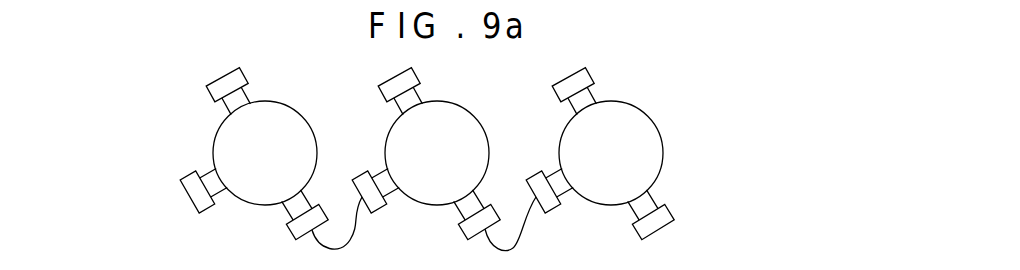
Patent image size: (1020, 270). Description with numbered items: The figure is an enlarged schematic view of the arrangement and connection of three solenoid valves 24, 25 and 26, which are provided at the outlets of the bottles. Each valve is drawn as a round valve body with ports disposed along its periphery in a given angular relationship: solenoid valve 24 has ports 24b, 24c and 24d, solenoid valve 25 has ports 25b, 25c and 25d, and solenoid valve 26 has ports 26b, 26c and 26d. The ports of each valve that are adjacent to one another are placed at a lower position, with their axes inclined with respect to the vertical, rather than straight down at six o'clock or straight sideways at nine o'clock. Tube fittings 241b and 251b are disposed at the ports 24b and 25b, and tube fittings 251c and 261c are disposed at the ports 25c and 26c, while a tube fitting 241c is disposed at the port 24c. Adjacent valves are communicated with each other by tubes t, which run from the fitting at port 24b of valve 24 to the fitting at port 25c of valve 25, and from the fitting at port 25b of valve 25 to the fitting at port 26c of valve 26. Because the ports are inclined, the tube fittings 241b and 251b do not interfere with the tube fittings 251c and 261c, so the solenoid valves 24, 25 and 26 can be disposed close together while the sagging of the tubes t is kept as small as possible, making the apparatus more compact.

The solenoid valve 24 is at (277, 164).
The port 24b is at (307, 193).
The port 24c is at (167, 190).
The port 24d is at (259, 93).
The tube fitting 241b is at (310, 217).
The tube fitting 241c is at (197, 198).
The solenoid valve 25 is at (447, 163).
The port 25b is at (486, 206).
The port 25c is at (385, 178).
The port 25d is at (428, 90).
The tube fitting 251b is at (492, 213).
The tube fitting 251c is at (368, 180).
The solenoid valve 26 is at (622, 160).
The port 26b is at (668, 203).
The port 26c is at (548, 177).
The port 26d is at (602, 90).
The tube fitting 261c is at (540, 185).
The tube t is at (350, 240).